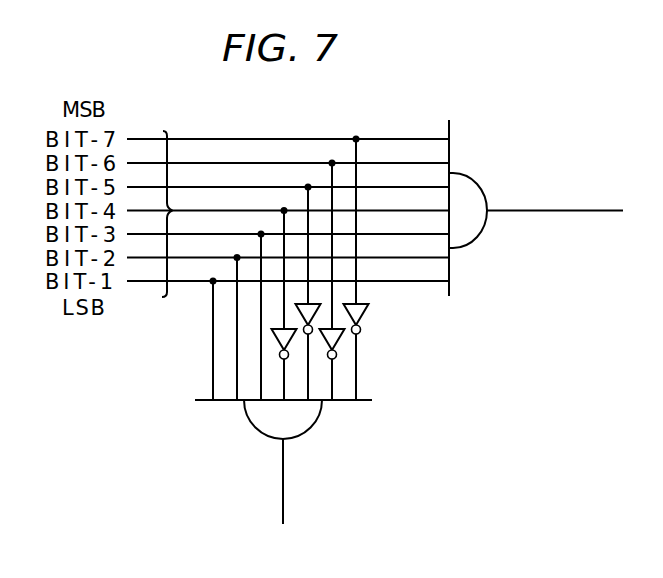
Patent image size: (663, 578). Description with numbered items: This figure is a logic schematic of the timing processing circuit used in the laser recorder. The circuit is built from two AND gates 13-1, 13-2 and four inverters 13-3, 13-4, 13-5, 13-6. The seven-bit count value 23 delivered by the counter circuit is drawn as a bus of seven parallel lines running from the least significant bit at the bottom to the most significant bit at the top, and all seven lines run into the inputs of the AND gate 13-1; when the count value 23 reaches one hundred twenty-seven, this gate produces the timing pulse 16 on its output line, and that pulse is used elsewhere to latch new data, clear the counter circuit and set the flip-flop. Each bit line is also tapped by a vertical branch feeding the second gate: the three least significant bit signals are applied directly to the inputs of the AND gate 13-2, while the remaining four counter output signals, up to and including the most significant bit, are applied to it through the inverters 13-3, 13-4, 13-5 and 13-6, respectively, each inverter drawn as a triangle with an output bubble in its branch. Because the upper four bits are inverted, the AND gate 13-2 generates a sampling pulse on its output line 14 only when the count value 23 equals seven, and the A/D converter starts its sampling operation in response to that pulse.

The count value 23 is at (168, 157).
The AND gate 13-1 is at (458, 180).
The AND gate 13-2 is at (313, 415).
The inverter 13-3 is at (278, 340).
The inverter 13-4 is at (301, 312).
The inverter 13-5 is at (340, 343).
The inverter 13-6 is at (365, 318).
The timing pulse 16 is at (557, 210).
The output line 14 is at (285, 484).